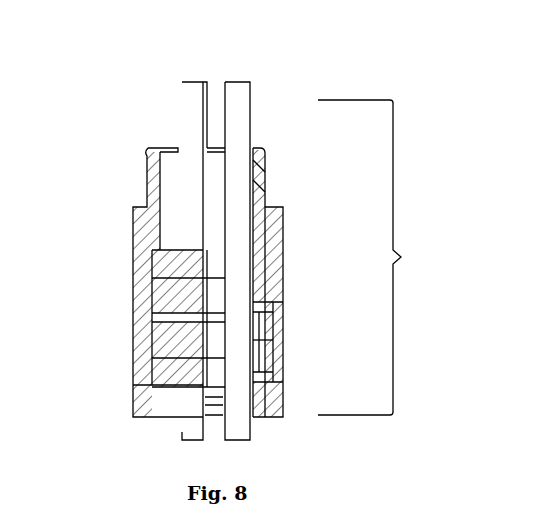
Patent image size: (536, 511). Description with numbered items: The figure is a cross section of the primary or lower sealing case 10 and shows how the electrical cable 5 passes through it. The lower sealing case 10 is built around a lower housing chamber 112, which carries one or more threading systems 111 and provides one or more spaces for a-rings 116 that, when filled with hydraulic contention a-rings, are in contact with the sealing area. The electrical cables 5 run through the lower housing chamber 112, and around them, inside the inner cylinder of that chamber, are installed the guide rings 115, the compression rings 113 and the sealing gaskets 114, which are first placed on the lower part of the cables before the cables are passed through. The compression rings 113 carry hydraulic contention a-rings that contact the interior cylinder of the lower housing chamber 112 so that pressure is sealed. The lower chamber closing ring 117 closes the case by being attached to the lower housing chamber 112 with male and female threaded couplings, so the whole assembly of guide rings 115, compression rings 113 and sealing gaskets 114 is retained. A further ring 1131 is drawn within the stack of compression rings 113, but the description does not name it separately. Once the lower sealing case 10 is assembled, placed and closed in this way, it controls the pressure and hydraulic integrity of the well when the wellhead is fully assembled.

The electrical cable 5 is at (190, 88).
The primary or lower sealing case 10 is at (383, 257).
The threading system 111 is at (147, 157).
The lower housing chamber 112 is at (268, 215).
The compression ring 113 is at (162, 335).
The bearing inner ring 1131 is at (175, 288).
The sealing gasket 114 is at (258, 303).
The guide ring 115 is at (258, 352).
The a-ring space 116 is at (263, 188).
The lower chamber closing ring 117 is at (262, 385).